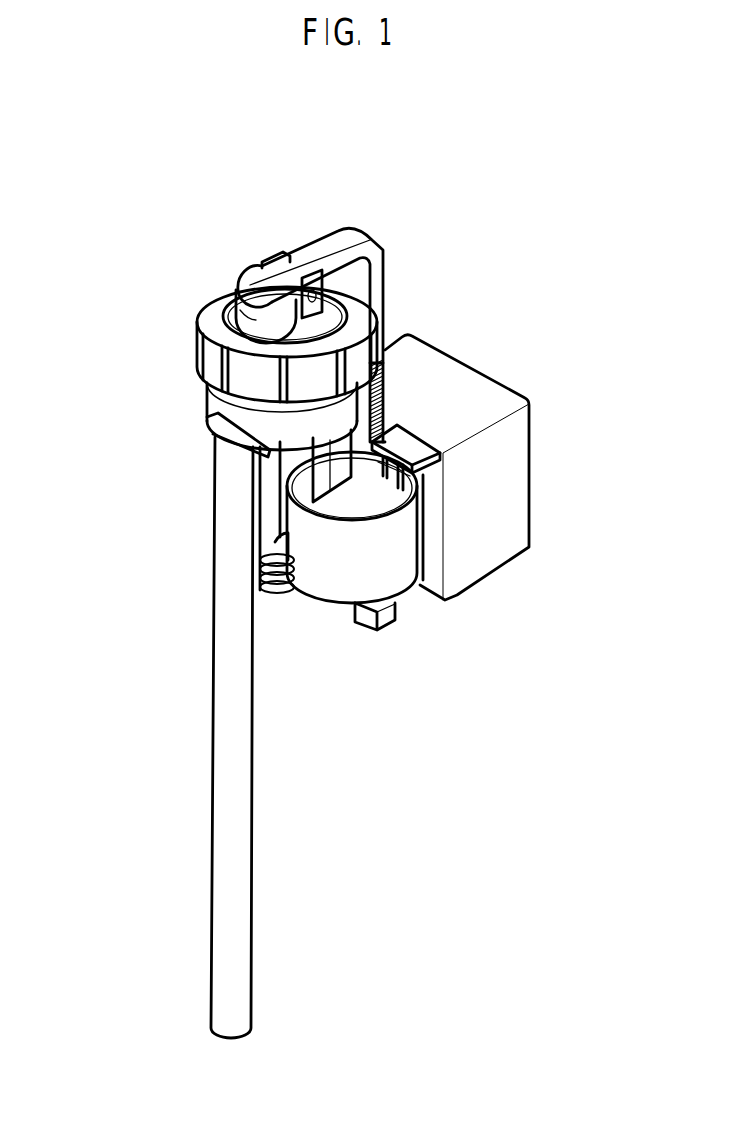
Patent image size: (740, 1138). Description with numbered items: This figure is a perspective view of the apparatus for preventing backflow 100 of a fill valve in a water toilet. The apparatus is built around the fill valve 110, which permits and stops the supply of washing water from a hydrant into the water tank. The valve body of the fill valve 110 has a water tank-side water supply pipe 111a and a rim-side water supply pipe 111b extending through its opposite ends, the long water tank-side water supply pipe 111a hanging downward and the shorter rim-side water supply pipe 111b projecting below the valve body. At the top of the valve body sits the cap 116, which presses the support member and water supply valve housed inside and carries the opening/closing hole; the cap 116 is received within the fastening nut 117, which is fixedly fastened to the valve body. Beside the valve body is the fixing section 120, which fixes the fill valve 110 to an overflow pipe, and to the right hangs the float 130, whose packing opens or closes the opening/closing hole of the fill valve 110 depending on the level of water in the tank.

The apparatus for preventing backflow 100 is at (178, 497).
The fill valve 110 is at (194, 358).
The water tank-side water supply pipe 111a is at (222, 626).
The rim-side water supply pipe 111b is at (335, 503).
The cap 116 is at (257, 318).
The fastening nut 117 is at (203, 330).
The fixing section 120 is at (393, 572).
The float 130 is at (518, 488).